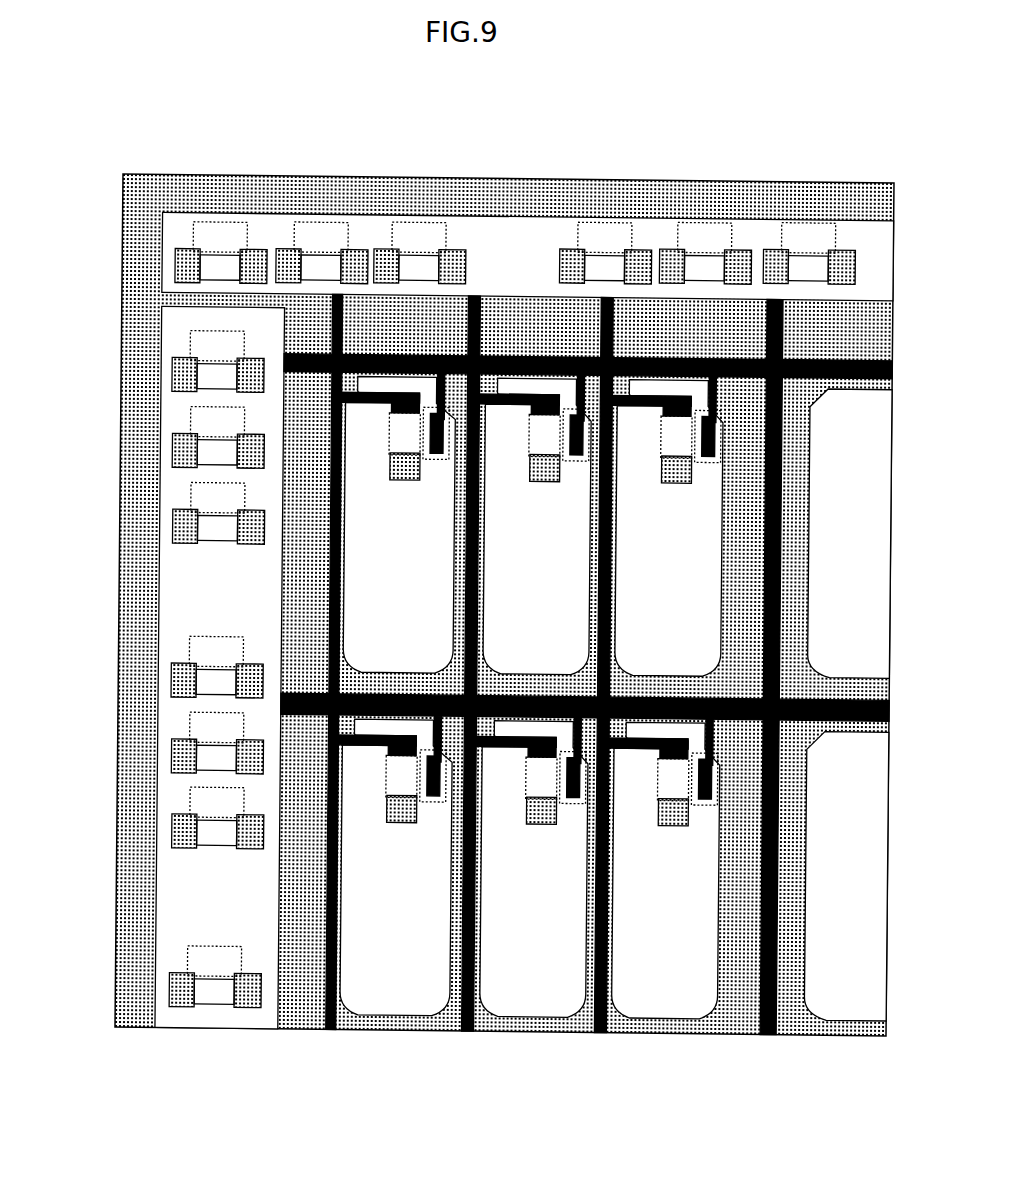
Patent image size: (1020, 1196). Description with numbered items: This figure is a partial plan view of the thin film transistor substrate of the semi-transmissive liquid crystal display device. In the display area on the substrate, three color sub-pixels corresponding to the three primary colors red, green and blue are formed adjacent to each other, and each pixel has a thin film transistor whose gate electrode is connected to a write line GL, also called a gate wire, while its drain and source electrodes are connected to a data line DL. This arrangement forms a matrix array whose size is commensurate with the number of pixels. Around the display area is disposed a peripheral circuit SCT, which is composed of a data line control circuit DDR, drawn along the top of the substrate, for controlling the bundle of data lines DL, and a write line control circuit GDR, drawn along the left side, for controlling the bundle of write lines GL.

The peripheral circuit SCT is at (490, 579).
The data line control circuit DDR is at (528, 197).
The data line DL is at (555, 586).
The write line control circuit GDR is at (150, 667).
The write line (gate wire) GL is at (467, 536).